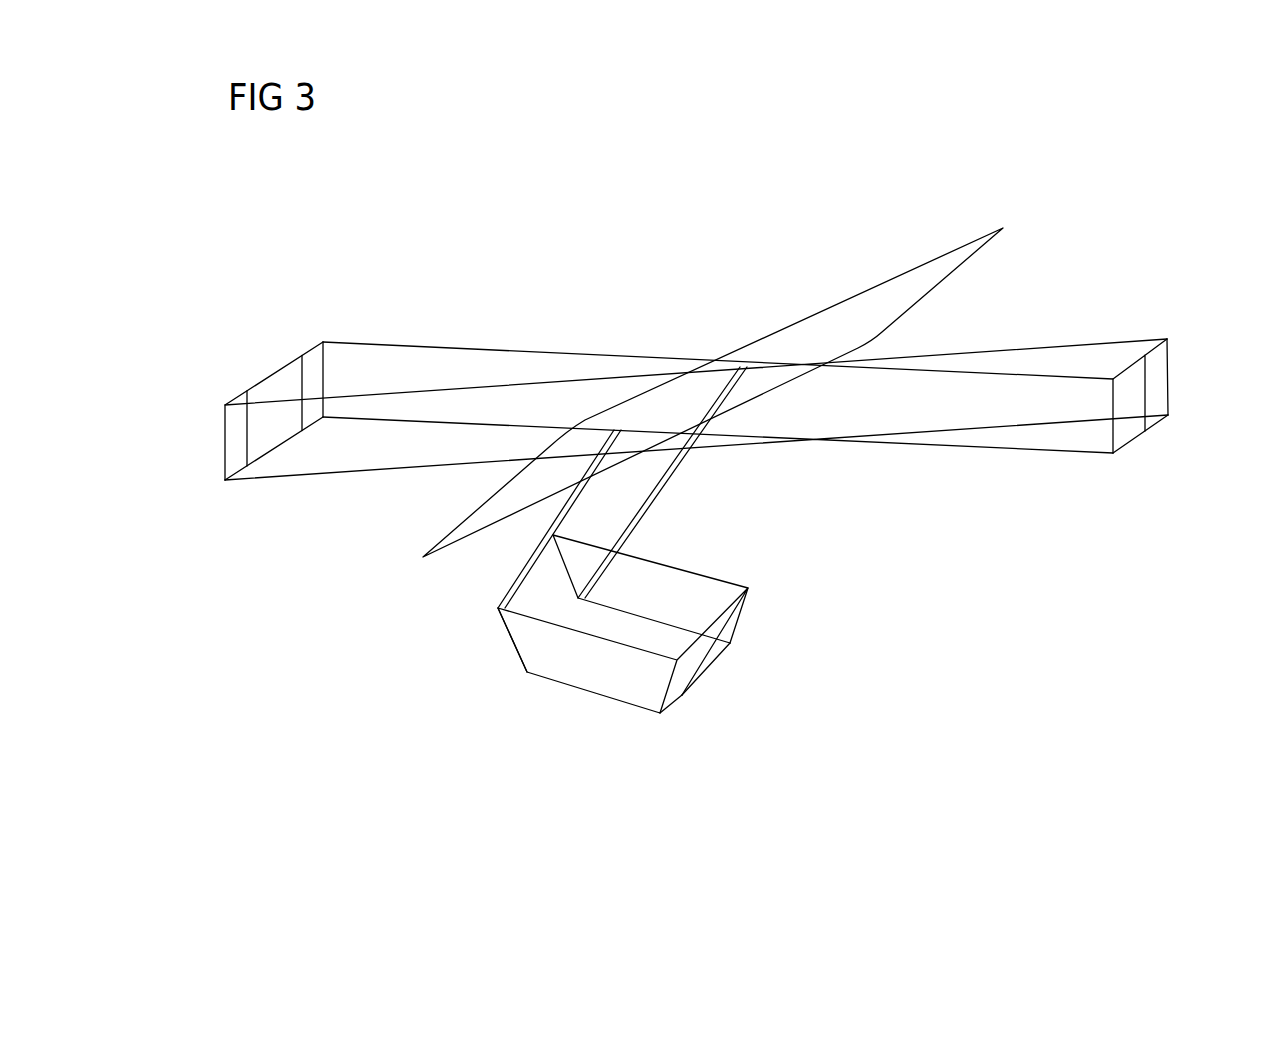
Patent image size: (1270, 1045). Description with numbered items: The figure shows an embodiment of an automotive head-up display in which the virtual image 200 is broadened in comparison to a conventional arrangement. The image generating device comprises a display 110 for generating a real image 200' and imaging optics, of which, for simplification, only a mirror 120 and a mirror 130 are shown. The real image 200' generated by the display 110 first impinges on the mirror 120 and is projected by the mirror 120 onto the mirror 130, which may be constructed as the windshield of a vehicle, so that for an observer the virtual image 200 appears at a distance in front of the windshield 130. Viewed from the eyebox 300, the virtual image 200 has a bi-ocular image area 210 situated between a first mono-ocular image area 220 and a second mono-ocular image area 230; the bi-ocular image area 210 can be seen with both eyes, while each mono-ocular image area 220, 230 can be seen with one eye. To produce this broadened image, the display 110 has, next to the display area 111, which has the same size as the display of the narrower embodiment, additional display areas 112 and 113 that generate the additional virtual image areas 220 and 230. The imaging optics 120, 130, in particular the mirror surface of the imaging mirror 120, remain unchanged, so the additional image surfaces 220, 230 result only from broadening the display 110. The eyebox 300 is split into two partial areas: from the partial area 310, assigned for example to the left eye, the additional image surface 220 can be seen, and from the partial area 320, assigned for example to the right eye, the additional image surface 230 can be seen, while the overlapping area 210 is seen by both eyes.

The display 110 is at (614, 652).
The real image 200' is at (623, 624).
The display area 111 is at (705, 672).
The additional display area 112 is at (742, 619).
The additional display area 113 is at (681, 698).
The mirror 120 is at (510, 640).
The mirror 130 is at (907, 285).
The virtual image 200 is at (330, 357).
The bi-ocular image area 210 is at (283, 387).
The first mono-ocular image area 220 is at (325, 373).
The second mono-ocular image area 230 is at (240, 482).
The eyebox 300 is at (1174, 420).
The partial area 310 is at (1133, 450).
The partial area 320 is at (1163, 425).